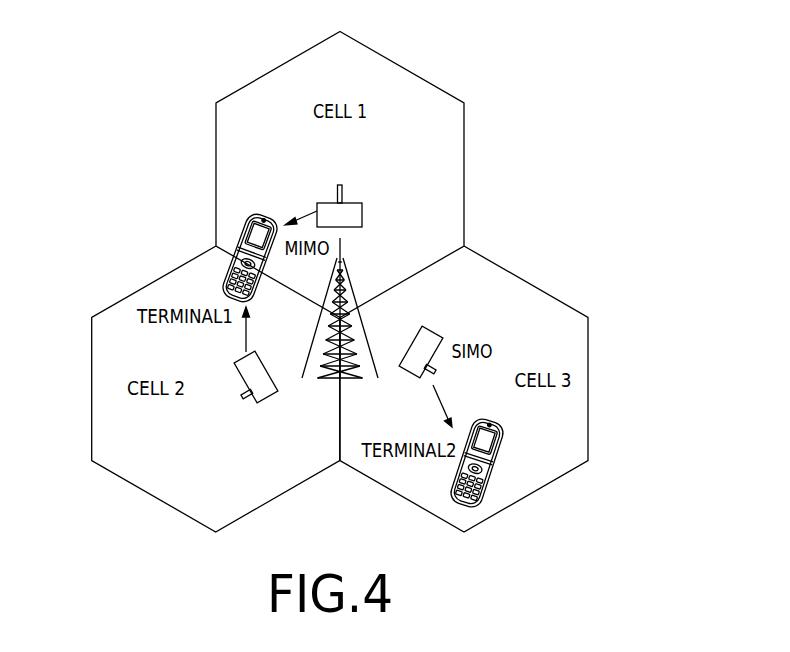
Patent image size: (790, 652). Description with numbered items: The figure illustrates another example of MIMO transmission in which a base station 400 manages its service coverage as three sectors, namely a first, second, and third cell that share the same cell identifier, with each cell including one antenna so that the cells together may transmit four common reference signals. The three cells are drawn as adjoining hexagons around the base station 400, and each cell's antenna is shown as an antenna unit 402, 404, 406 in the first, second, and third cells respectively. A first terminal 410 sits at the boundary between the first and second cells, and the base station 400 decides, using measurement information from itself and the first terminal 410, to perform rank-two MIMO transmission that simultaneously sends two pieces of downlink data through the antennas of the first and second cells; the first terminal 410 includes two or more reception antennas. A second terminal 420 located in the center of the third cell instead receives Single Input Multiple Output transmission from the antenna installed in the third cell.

The base station 400 is at (355, 380).
The MIMO transmitter unit 402 is at (362, 215).
The transmitter unit in cell 2 404 is at (270, 395).
The SIMO transmitter unit 406 is at (433, 331).
The first terminal 410 is at (263, 211).
The second terminal 420 is at (507, 433).